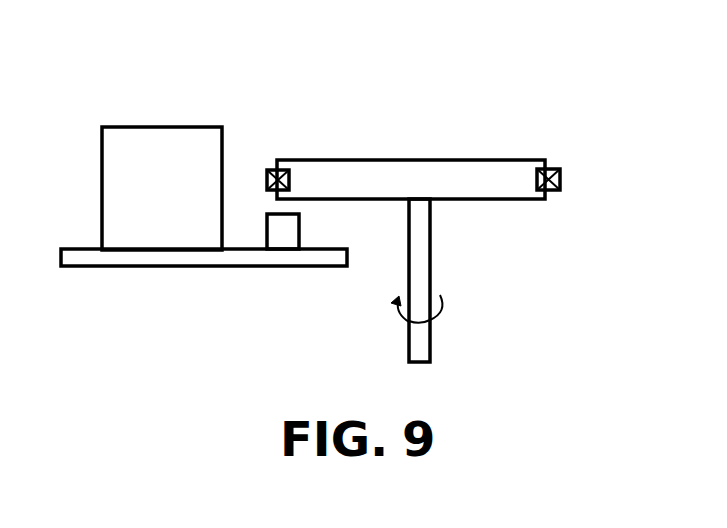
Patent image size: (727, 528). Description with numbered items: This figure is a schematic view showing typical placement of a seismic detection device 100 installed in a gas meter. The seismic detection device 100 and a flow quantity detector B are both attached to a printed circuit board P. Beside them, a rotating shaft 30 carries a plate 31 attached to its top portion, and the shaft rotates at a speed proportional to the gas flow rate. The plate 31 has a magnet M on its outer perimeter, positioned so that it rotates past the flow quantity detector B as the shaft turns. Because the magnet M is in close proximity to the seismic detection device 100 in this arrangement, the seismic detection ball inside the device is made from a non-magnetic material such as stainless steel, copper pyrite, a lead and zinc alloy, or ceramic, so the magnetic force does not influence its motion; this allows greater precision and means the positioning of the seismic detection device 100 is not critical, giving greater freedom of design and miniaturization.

The seismic detection device 100 is at (140, 137).
The printed circuit board P is at (171, 267).
The flow quantity detector B is at (292, 236).
The plate 31 is at (445, 165).
The magnet M is at (267, 180).
The rotating shaft 30 is at (420, 252).